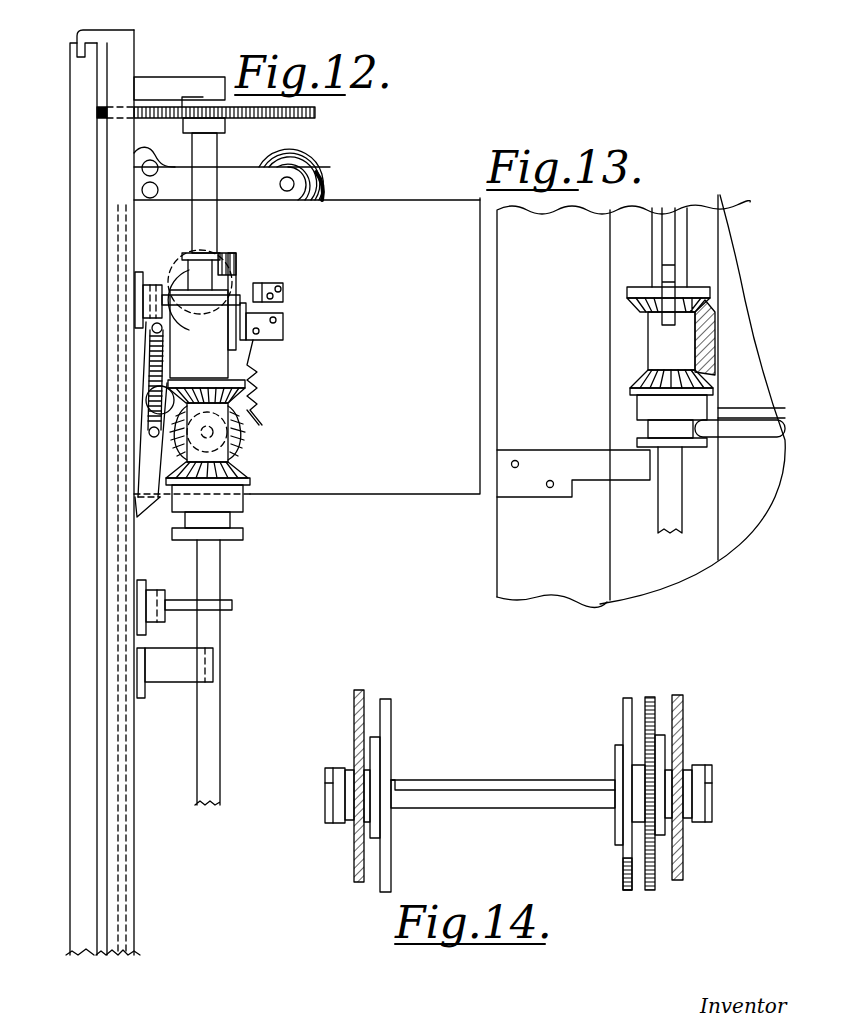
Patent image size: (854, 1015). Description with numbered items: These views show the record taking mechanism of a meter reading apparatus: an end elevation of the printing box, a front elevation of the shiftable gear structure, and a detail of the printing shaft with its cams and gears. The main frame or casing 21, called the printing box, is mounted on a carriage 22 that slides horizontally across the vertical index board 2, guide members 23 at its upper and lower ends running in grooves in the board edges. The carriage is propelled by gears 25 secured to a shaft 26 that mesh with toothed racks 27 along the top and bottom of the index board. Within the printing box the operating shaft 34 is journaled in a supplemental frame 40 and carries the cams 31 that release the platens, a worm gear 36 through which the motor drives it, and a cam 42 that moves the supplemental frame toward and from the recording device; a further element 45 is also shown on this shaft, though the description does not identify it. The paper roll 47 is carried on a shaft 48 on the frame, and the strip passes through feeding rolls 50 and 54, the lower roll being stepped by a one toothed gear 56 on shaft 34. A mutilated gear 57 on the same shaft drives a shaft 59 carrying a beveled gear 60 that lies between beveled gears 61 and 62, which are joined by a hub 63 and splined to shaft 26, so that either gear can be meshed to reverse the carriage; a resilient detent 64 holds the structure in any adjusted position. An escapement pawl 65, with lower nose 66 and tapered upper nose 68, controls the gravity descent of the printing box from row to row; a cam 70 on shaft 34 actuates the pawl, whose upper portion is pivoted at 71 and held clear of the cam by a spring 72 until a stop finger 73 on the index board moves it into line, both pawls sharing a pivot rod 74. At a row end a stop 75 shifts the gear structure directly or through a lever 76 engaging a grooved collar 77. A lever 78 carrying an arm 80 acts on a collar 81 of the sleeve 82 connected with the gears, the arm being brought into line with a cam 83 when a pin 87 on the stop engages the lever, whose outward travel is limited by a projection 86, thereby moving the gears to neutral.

In FIG. 12, the index board 2 is at (70, 80).
In FIG. 13, the index board 2 is at (623, 404).
In FIG. 12, the main frame or casing (printing box) 21 is at (305, 346).
In FIG. 13, the main frame or casing (printing box) 21 is at (692, 399).
In FIG. 14, the main frame or casing (printing box) 21 is at (354, 706).
In FIG. 12, the carriage 22 is at (120, 55).
In FIG. 13, the carriage 22 is at (640, 405).
In FIG. 12, the guide members 23 is at (80, 36).
In FIG. 12, the gears 25 is at (316, 115).
In FIG. 12, the shaft (driving shaft of carriage) 26 is at (205, 211).
In FIG. 13, the shaft (driving shaft of carriage) 26 is at (662, 508).
In FIG. 12, the toothed racks 27 is at (97, 118).
In FIG. 14, the cam 31 is at (490, 790).
In FIG. 12, the operating shaft 34 is at (200, 292).
In FIG. 14, the operating shaft 34 is at (540, 808).
In FIG. 14, the worm gear 36 is at (650, 697).
In FIG. 12, the supplemental frame 40 is at (240, 167).
In FIG. 14, the cam 42 is at (376, 737).
In FIG. 14, the disk 45 is at (623, 711).
In FIG. 12, the roll (of paper) 47 is at (315, 170).
In FIG. 12, the shaft 48 is at (295, 184).
In FIG. 12, the lower feeding roll or shaft 50 is at (142, 190).
In FIG. 12, the feeding roll 54 is at (142, 168).
In FIG. 14, the one toothed gear 56 is at (615, 751).
In FIG. 14, the mutilated gear 57 is at (386, 716).
In FIG. 12, the shaft 59 is at (232, 432).
In FIG. 12, the beveled gear 60 is at (245, 446).
In FIG. 13, the beveled gear 60 is at (708, 341).
In FIG. 12, the beveled gear (upper) 61 is at (246, 398).
In FIG. 13, the beveled gear (upper) 61 is at (627, 298).
In FIG. 12, the beveled gear (lower) 62 is at (250, 477).
In FIG. 13, the beveled gear (lower) 62 is at (630, 389).
In FIG. 12, the hub 63 is at (207, 432).
In FIG. 13, the hub 63 is at (662, 354).
In FIG. 12, the resilient detent 64 is at (257, 396).
In FIG. 13, the resilient detent 64 is at (664, 322).
In FIG. 12, the escapement pawl 65 is at (150, 468).
In FIG. 12, the nose (lower end of pawl) 66 is at (151, 516).
In FIG. 12, the tapered nose 68 is at (140, 283).
In FIG. 12, the cam 70 is at (189, 280).
In FIG. 14, the cam 70 is at (349, 770).
In FIG. 12, the pivot 71 is at (150, 378).
In FIG. 12, the spring 72 is at (152, 430).
In FIG. 12, the projection or stop finger 73 is at (143, 302).
In FIG. 12, the shaft or pivot rod 74 is at (150, 412).
In FIG. 12, the stop 75 is at (213, 666).
In FIG. 13, the stop 75 is at (590, 470).
In FIG. 13, the lever 76 is at (755, 432).
In FIG. 12, the grooved collar 77 is at (222, 534).
In FIG. 13, the grooved collar 77 is at (637, 442).
In FIG. 12, the lever 78 is at (238, 262).
In FIG. 12, the arm 80 is at (216, 264).
In FIG. 12, the collar 81 is at (188, 253).
In FIG. 12, the sleeve 82 is at (199, 334).
In FIG. 13, the sleeve 82 is at (657, 253).
In FIG. 12, the cam 83 is at (200, 276).
In FIG. 14, the cam 83 is at (325, 776).
In FIG. 12, the projection 86 is at (283, 332).
In FIG. 12, the pin 87 is at (242, 292).